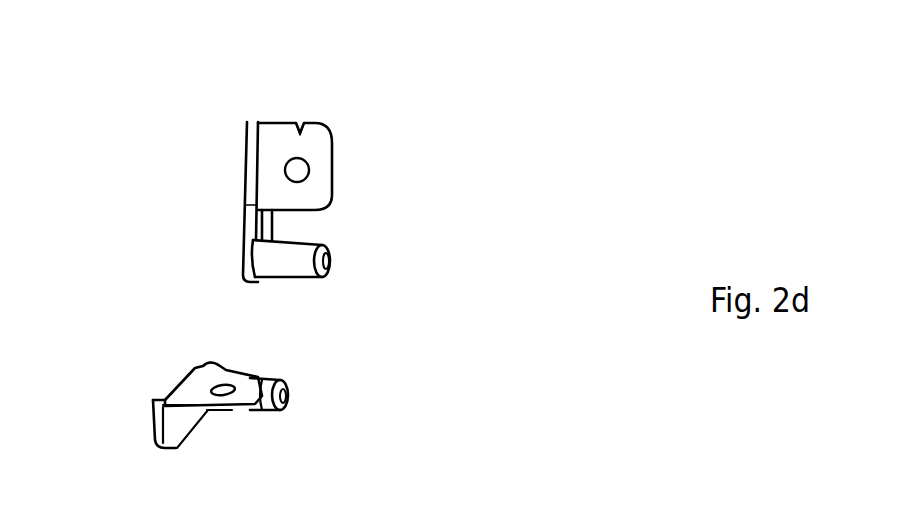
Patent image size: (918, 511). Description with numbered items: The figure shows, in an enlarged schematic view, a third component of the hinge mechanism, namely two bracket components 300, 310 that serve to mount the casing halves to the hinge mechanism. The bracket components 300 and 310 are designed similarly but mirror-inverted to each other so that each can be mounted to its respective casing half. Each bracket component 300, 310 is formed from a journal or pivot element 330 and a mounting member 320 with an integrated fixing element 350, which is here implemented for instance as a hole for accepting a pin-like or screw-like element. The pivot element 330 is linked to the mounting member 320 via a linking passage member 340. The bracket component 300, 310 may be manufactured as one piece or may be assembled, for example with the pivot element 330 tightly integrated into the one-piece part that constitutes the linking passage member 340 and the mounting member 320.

The bracket component 300 is at (212, 183).
The bracket component 310 is at (122, 402).
The mounting member 320 is at (348, 170).
The pivot element 330 is at (344, 263).
The linking passage member 340 is at (283, 225).
The fixing element 350 is at (304, 130).